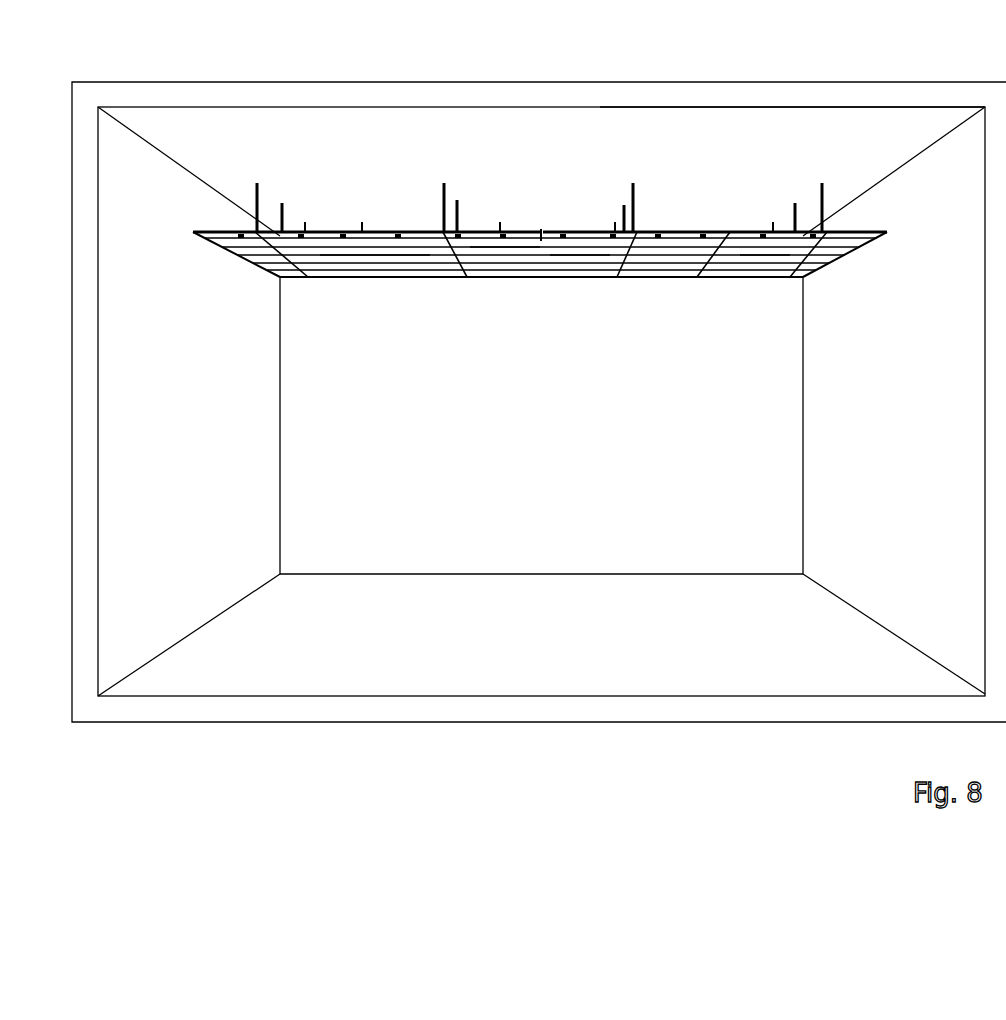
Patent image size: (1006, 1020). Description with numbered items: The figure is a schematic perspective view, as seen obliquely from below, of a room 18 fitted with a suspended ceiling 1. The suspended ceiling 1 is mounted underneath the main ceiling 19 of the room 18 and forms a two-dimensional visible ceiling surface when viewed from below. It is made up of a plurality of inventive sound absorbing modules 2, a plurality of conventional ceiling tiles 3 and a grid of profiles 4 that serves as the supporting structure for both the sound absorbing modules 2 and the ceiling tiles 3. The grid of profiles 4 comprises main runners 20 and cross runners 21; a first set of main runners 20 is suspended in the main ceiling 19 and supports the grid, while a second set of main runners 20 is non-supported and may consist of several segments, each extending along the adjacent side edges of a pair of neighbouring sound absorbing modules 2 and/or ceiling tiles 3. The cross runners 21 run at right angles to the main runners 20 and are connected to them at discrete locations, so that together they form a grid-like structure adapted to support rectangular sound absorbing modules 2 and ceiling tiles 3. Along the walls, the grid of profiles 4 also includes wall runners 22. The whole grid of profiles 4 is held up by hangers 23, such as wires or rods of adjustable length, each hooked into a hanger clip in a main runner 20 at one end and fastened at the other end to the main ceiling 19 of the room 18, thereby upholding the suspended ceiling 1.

The suspended ceiling 1 is at (609, 306).
The sound absorbing module 2 is at (375, 258).
The ceiling tile 3 is at (494, 250).
The grid of profiles 4 is at (455, 262).
The room 18 is at (545, 505).
The main ceiling 19 is at (686, 134).
The main runner 20 is at (720, 240).
The cross runner 21 is at (262, 268).
The wall runner 22 is at (860, 238).
The hanger 23 is at (446, 197).